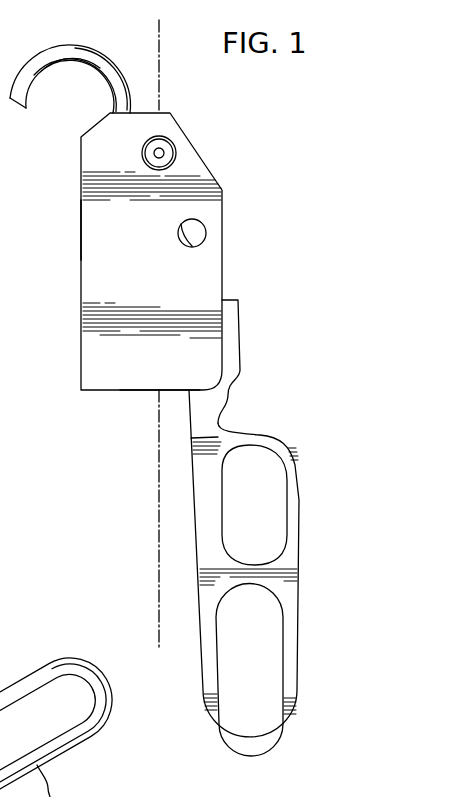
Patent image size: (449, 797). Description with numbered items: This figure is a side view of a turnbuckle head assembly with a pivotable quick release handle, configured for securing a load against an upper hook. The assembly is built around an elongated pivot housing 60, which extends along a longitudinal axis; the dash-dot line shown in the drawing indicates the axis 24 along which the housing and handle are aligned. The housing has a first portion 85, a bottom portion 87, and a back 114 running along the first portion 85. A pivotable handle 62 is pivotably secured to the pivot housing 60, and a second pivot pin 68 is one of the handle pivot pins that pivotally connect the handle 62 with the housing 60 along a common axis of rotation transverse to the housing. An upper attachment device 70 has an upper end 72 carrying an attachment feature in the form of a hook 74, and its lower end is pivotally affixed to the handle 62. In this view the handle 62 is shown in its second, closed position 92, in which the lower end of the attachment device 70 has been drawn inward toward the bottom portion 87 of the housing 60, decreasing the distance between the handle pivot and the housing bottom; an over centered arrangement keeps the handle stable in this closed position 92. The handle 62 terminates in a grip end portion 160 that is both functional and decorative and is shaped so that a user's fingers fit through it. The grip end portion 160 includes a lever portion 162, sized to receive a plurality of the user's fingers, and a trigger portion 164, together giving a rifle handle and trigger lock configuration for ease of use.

The axis 24 is at (160, 88).
The pivot housing 60 is at (123, 271).
The pivotable handle 62 is at (191, 440).
The second pivot pin 68 is at (164, 153).
The upper attachment device 70 is at (72, 62).
The upper end 72 is at (61, 46).
The hook 74 is at (73, 64).
The first portion 85 is at (80, 358).
The bottom portion 87 is at (130, 389).
The closed position 92 is at (275, 528).
The back 114 is at (80, 232).
The grip end portion 160 is at (324, 594).
The lever portion 162 is at (293, 667).
The trigger portion 164 is at (333, 432).